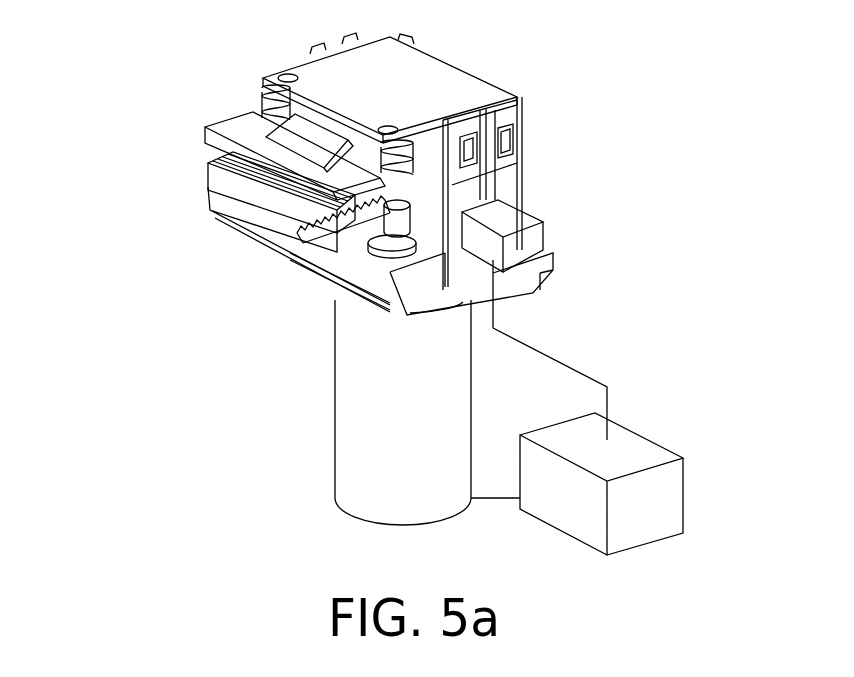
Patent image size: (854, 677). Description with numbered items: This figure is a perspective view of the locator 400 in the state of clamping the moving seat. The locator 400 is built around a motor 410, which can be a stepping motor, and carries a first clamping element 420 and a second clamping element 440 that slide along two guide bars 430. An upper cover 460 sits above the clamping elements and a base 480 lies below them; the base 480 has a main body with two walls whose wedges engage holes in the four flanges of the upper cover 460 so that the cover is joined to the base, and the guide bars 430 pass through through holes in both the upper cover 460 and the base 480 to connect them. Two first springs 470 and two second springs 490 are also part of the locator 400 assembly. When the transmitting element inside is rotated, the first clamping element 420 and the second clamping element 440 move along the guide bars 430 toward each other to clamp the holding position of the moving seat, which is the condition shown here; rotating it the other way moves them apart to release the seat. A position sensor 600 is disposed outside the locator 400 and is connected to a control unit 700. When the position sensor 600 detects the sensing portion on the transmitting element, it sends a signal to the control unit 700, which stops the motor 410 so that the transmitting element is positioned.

The locator 400 is at (88, 26).
The motor 410 is at (360, 452).
The first clamping element 420 is at (238, 128).
The guide bars 430 is at (405, 232).
The second clamping element 440 is at (213, 180).
The upper cover 460 is at (440, 88).
The first springs 470 is at (392, 208).
The base 480 is at (468, 290).
The second springs 490 is at (442, 264).
The position sensor 600 is at (508, 215).
The control unit 700 is at (650, 452).